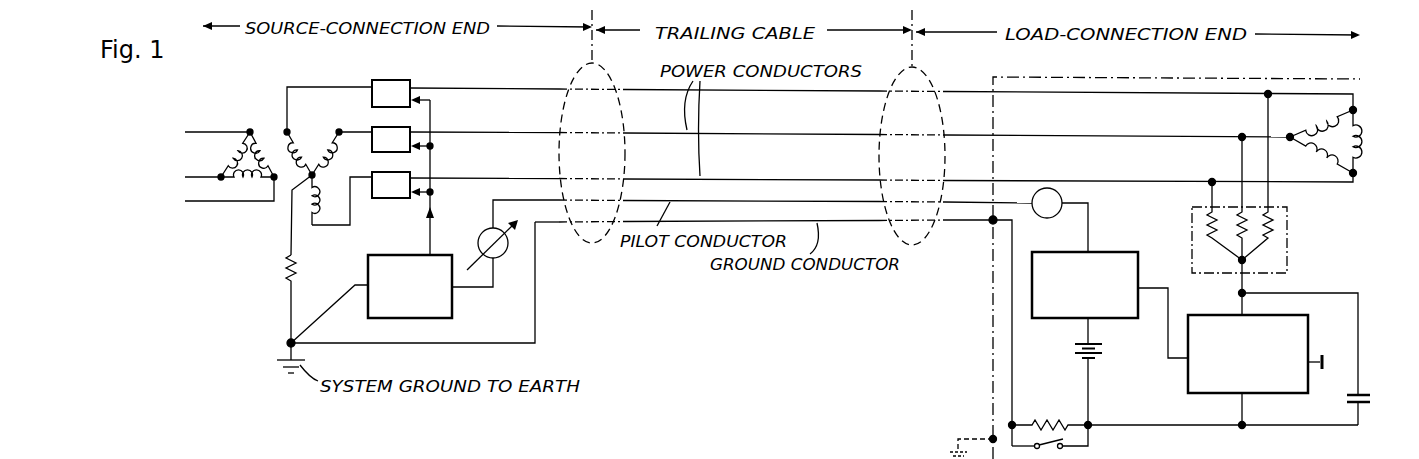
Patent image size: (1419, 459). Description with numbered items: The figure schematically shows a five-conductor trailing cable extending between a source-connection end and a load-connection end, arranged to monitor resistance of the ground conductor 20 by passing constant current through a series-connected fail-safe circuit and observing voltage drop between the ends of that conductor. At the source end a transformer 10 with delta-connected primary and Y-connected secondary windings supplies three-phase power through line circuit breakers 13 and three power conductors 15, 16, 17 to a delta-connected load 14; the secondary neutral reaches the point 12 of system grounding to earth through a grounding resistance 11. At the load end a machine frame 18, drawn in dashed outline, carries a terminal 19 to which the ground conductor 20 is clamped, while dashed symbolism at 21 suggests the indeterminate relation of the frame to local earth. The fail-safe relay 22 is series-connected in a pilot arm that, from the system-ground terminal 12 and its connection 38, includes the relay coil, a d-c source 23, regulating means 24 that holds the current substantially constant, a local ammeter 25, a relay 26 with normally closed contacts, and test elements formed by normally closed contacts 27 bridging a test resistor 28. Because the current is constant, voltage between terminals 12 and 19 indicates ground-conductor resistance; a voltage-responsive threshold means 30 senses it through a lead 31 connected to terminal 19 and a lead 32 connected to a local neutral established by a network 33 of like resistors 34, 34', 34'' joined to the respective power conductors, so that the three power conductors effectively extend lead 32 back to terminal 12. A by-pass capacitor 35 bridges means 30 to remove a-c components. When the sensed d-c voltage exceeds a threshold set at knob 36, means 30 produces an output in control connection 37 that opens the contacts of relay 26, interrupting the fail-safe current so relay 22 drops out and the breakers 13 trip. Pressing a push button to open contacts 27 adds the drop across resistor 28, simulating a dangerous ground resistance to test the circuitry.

The transformer 10 is at (273, 127).
The grounding resistance 11 is at (285, 263).
The point of system-grounding to earth 12 is at (286, 343).
The line circuit breakers 13 is at (372, 78).
The delta-connected load 14 is at (1324, 142).
The power conductor 15 is at (487, 78).
The power conductor 16 is at (488, 120).
The power conductor 17 is at (487, 167).
The machine frame 18 is at (993, 280).
The terminal 19 is at (990, 223).
The ground conductor 20 is at (533, 300).
The dashed-line symbolism of local-earth ground 21 is at (960, 432).
The fail-safe relay 22 is at (452, 312).
The d-c source 23 is at (1103, 348).
The regulating means 24 is at (480, 240).
The local ammeter 25 is at (1047, 219).
The relay with normally closed contacts 26 is at (1115, 252).
The normally closed contacts 27 is at (1068, 450).
The test resistor 28 is at (1050, 417).
The voltage-responsive means 30 is at (1315, 394).
The voltage-sensing lead 31 is at (1244, 420).
The voltage-sensing lead 32 is at (1240, 305).
The network of resistors 33 is at (1287, 262).
The resistor 34 is at (1222, 203).
The resistor 34' is at (1212, 206).
The resistor 34'' is at (1290, 176).
The by-pass capacitor 35 is at (1363, 394).
The knob 36 is at (1325, 357).
The control connection 37 is at (1168, 300).
The connection 38 is at (326, 312).